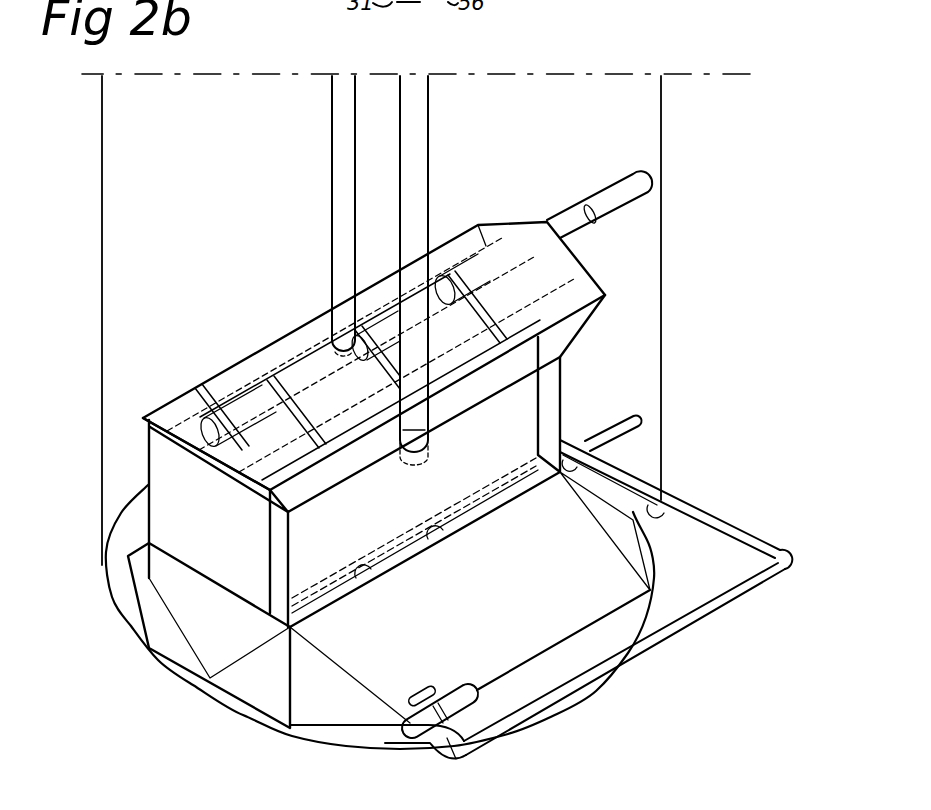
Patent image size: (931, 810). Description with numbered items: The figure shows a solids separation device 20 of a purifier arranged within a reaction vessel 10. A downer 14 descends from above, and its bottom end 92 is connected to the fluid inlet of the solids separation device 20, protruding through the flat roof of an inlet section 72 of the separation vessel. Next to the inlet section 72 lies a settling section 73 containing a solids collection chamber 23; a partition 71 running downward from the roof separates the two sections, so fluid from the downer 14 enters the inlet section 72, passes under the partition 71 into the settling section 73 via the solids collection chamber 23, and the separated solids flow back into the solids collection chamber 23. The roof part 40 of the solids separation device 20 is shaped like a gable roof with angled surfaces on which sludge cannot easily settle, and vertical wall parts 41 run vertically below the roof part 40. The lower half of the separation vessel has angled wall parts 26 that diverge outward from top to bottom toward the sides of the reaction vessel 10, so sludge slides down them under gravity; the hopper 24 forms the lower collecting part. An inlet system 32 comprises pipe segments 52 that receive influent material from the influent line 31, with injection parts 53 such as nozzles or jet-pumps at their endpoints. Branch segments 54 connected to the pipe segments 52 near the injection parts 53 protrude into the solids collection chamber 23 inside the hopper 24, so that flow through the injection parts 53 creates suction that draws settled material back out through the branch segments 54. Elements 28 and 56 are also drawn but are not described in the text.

The reaction vessel 10 is at (661, 323).
The downer 14 is at (417, 163).
The solids separation device 20 is at (390, 351).
The solids collection chamber 23 is at (213, 618).
The hopper 24 is at (238, 659).
The angled wall parts 26 is at (605, 602).
The rod 28 is at (347, 181).
The influent line 31 is at (623, 432).
The inlet system 32 is at (720, 525).
The roof part 40 is at (577, 267).
The vertical wall parts 41 is at (148, 448).
The pipe segments 52 is at (718, 600).
The injection parts 53 is at (477, 690).
The branch segments 54 is at (458, 727).
The pipe 56 is at (617, 193).
The partition 71 is at (267, 543).
The inlet section 72 is at (280, 557).
The settling section 73 is at (190, 497).
The bottom end 92 is at (417, 412).